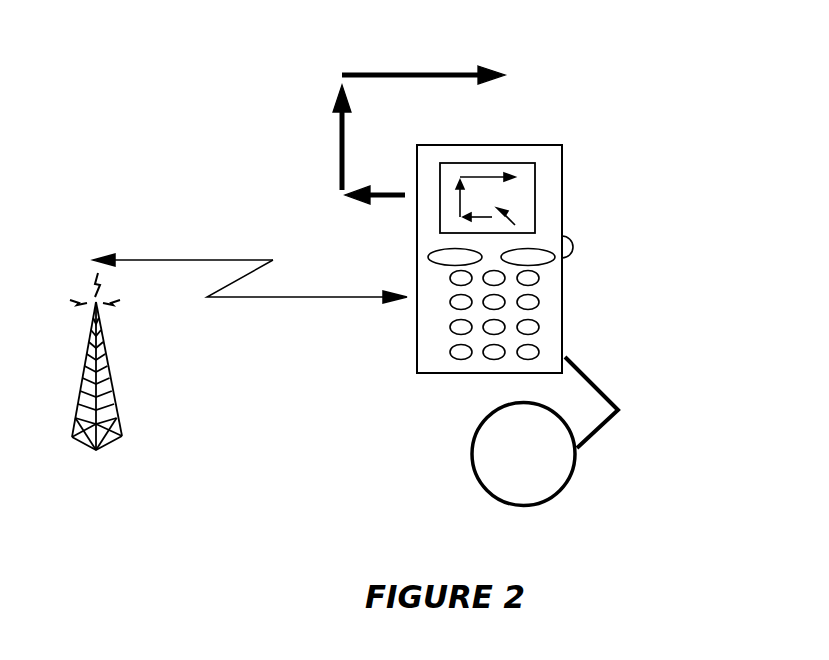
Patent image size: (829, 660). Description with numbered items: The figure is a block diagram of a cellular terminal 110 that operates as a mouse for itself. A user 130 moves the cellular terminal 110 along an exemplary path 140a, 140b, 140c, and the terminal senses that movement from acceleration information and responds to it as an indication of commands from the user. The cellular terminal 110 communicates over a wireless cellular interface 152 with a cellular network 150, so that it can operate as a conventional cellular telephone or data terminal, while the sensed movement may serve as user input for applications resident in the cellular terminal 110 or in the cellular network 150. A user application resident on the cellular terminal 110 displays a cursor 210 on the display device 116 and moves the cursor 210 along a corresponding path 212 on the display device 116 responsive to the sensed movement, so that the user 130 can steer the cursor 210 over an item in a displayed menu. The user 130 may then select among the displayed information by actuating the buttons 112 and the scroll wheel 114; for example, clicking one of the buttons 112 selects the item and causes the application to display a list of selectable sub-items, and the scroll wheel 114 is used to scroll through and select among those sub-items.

The cellular terminal 110 is at (448, 145).
The buttons 112 is at (527, 327).
The scroll wheel 114 is at (573, 243).
The display device 116 is at (535, 172).
The user 130 is at (527, 505).
The path 140a is at (390, 200).
The path 140b is at (340, 125).
The path 140c is at (385, 75).
The cellular network 150 is at (110, 395).
The wireless cellular interface 152 is at (157, 258).
The cursor 210 is at (510, 217).
The cursor motion path 212 is at (488, 177).